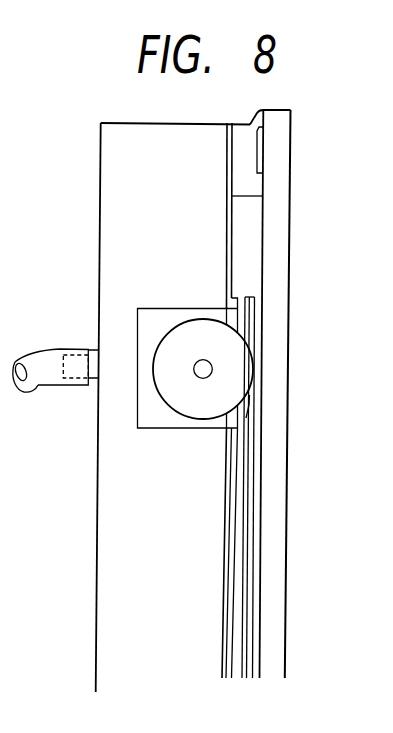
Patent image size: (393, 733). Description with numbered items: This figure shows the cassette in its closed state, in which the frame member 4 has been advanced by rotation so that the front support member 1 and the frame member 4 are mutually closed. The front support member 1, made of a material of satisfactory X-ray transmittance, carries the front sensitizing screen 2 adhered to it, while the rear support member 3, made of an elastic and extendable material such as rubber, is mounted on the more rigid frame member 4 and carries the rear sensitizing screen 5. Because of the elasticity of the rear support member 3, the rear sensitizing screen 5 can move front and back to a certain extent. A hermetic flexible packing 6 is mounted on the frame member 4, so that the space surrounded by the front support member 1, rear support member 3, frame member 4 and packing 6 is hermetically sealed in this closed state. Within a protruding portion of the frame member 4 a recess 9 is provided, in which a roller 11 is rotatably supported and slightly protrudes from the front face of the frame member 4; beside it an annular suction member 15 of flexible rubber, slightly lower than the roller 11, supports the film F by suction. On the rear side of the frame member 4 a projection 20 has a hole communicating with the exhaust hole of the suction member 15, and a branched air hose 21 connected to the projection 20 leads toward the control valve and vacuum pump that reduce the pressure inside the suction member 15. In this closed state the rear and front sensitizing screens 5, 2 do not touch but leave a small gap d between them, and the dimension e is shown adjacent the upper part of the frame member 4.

The front support member 1 is at (283, 165).
The front sensitizing screen 2 is at (257, 557).
The rear support member 3 is at (223, 515).
The frame member 4 is at (112, 182).
The rear sensitizing screen 5 is at (230, 557).
The hermetic flexible packing 6 is at (243, 139).
The recess 9 is at (142, 325).
The roller 11 is at (238, 360).
The annular suction member 15 is at (237, 319).
The projection 20 is at (95, 350).
The branched air hose 21 is at (38, 386).
The gap e is at (250, 224).
The film F is at (237, 427).
The small gap d is at (240, 471).